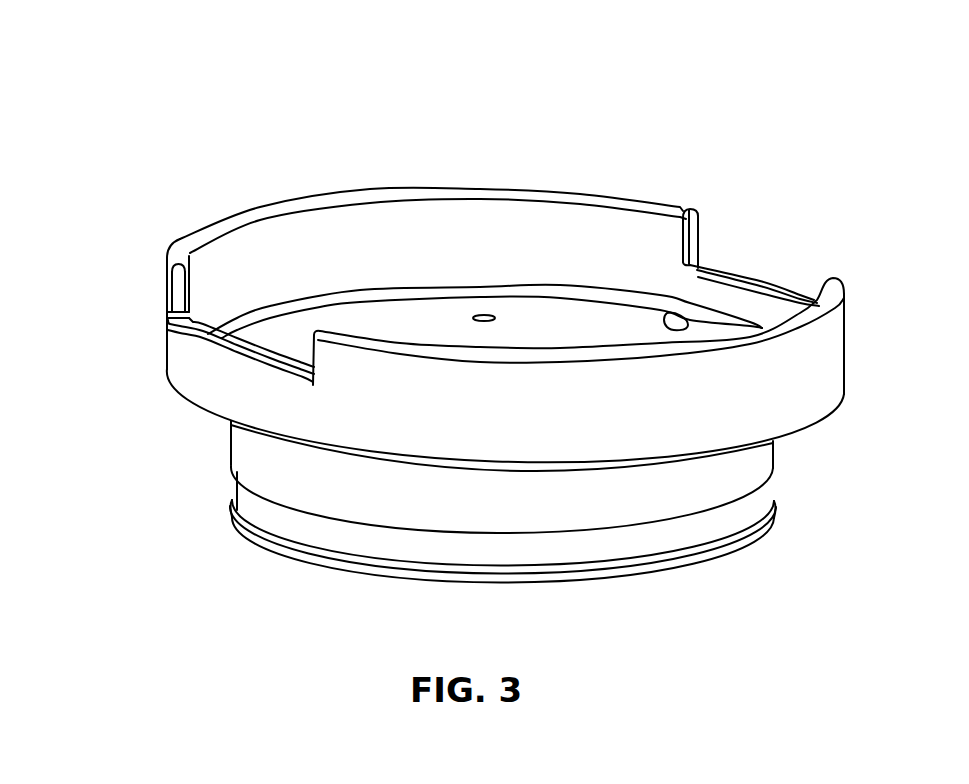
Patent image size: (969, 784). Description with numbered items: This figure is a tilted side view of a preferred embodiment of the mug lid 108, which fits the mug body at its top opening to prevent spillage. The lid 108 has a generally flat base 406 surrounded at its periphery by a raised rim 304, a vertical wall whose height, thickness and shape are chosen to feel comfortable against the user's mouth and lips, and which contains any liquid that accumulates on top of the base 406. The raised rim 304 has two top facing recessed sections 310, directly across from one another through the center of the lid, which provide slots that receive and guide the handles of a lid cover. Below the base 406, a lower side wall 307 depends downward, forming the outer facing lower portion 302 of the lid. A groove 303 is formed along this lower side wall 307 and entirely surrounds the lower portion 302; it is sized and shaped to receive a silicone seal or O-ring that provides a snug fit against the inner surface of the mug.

The lid 108 is at (514, 58).
The raised rim 304 is at (327, 200).
The recessed sections 310 is at (167, 323).
The base 406 is at (542, 328).
The lower portion 302 is at (783, 445).
The lower side wall 307 is at (240, 445).
The groove 303 is at (252, 498).